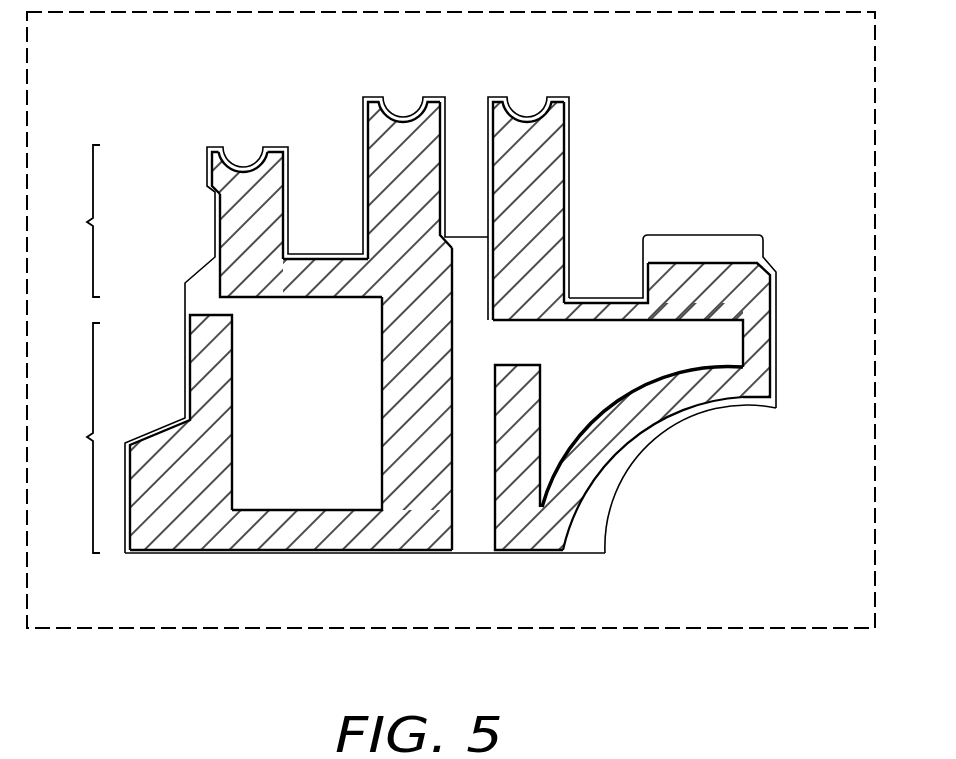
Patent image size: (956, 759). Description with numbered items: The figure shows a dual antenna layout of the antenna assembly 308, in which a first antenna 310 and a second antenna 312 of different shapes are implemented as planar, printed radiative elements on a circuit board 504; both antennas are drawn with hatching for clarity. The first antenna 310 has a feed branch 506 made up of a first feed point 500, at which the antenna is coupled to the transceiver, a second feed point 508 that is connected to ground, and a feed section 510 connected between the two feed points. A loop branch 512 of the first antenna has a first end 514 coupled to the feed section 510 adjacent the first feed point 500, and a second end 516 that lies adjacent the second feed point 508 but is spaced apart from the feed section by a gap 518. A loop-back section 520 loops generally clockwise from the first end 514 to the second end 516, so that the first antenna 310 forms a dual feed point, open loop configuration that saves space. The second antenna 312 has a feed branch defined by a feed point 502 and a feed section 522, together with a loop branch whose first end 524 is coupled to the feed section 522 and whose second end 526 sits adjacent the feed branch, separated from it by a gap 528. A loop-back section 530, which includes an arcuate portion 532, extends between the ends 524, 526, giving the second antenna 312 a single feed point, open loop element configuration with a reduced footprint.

The antenna assembly 308 is at (705, 122).
The first antenna 310 is at (186, 561).
The second antenna 312 is at (721, 240).
The feed point 500 is at (403, 115).
The feed point 502 is at (527, 115).
The circuit board 504 is at (585, 527).
The feed branch 506 is at (66, 221).
The second feed point 508 is at (247, 175).
The feed section 510 is at (322, 250).
The loop branch 512 is at (66, 438).
The first end 514 is at (438, 262).
The second end 516 is at (185, 305).
The gap 518 is at (212, 305).
The loop-back section 520 is at (307, 535).
The feed section 522 is at (556, 160).
The first end 524 is at (592, 305).
The second end 526 is at (527, 367).
The gap 528 is at (502, 352).
The loop-back section 530 is at (763, 343).
The arcuate portion 532 is at (645, 417).